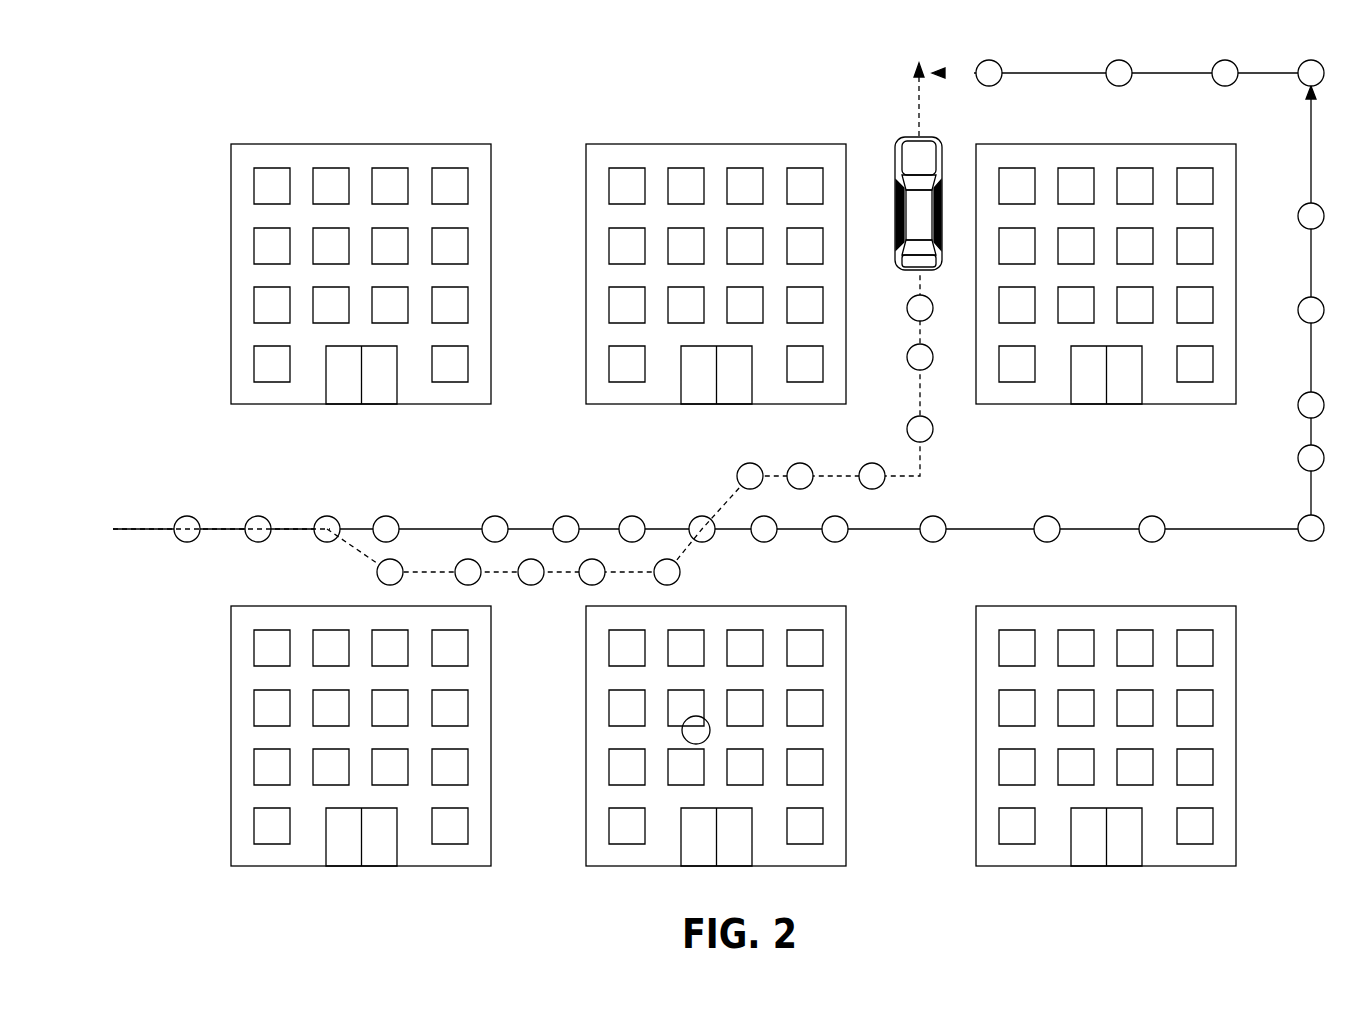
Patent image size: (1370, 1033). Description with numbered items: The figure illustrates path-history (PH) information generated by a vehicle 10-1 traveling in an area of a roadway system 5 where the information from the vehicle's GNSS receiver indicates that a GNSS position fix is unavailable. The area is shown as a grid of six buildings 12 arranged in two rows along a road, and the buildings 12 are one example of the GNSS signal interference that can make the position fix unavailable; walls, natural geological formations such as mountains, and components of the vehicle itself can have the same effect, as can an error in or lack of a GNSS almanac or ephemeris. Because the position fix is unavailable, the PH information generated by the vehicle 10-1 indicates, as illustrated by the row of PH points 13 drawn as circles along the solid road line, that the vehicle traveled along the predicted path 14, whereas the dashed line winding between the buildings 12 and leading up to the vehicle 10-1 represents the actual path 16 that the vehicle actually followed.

The roadway system 5 is at (493, 83).
The vehicle 10-1 is at (897, 158).
The buildings 12 is at (335, 143).
The PH points 13 is at (180, 520).
The predicted path 14 is at (443, 529).
The actual path 16 is at (837, 473).